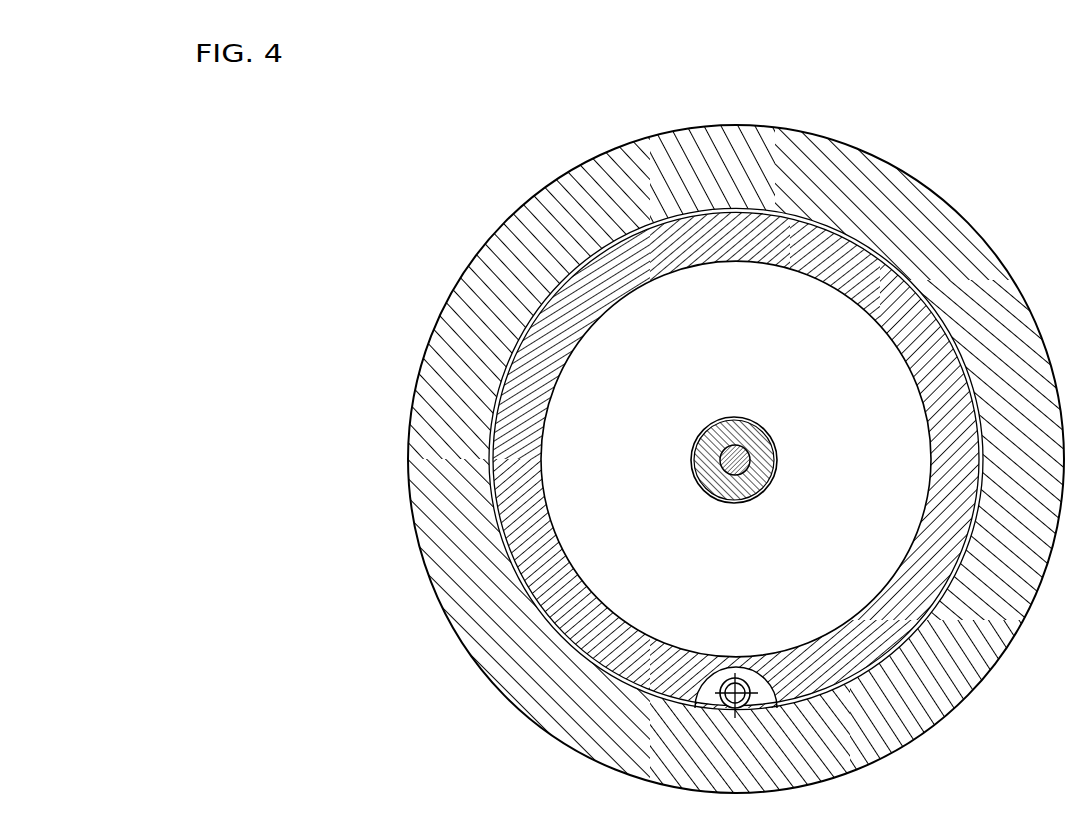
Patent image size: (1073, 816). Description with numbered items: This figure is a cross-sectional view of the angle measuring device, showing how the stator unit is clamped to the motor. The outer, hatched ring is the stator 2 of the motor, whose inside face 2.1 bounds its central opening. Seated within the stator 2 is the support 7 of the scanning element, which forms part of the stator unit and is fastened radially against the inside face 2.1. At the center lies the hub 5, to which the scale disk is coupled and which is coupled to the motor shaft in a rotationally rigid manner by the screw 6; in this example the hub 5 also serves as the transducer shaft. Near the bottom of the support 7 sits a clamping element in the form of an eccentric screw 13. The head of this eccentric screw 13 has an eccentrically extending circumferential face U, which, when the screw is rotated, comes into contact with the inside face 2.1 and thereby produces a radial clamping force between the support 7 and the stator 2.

The stator 2 is at (985, 263).
The inside face 2.1 is at (822, 690).
The hub 5 is at (752, 446).
The screw 6 is at (752, 464).
The support 7 is at (878, 300).
The eccentric screw 13 is at (740, 672).
The eccentrically extending circumferential face U is at (705, 690).